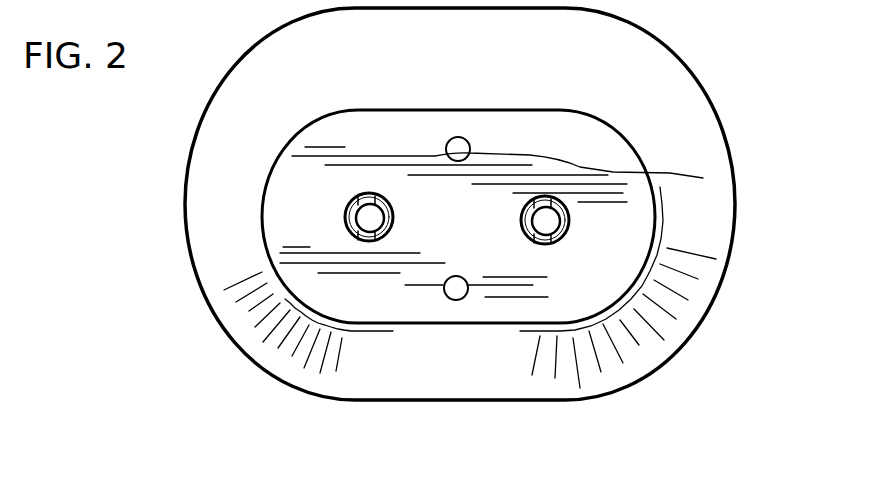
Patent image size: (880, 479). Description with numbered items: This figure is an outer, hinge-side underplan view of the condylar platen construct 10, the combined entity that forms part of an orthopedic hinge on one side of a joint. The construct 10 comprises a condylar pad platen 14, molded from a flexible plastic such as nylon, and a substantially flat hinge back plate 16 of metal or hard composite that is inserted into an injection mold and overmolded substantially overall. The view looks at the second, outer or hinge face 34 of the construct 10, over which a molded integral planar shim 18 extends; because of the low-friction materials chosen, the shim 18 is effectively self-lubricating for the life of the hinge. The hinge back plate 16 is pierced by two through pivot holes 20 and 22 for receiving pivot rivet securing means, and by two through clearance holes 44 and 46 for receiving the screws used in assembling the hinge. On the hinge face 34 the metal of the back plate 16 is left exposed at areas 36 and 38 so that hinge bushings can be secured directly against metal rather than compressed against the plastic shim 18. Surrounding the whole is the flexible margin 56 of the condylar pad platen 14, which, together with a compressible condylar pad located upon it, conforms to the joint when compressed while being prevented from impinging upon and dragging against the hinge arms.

The condylar platen construct 10 is at (233, 137).
The condylar pad platen 14 is at (220, 170).
The hinge back plate 16 is at (347, 237).
The molded integral planar shim 18 is at (600, 152).
The through pivot hole 20 is at (363, 240).
The through pivot hole 22 is at (570, 220).
The second, outer or hinge face 34 is at (350, 240).
The exposed area of hinge back plate 36 is at (285, 323).
The exposed area of hinge back plate 38 is at (565, 233).
The through clearance hole 44 is at (462, 300).
The through clearance hole 46 is at (703, 178).
The flexible margin 56 is at (217, 218).